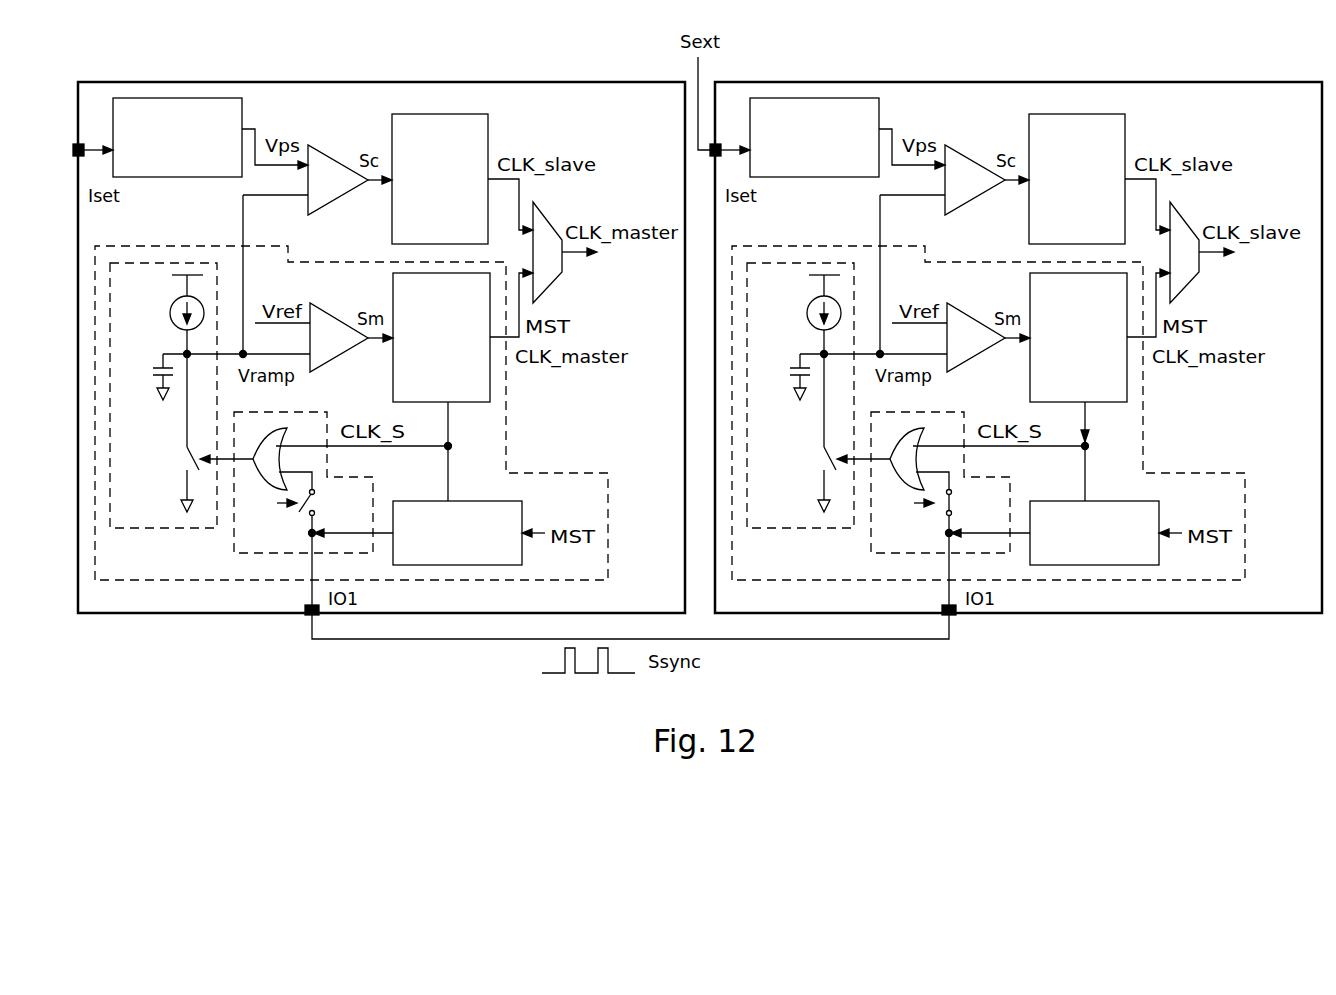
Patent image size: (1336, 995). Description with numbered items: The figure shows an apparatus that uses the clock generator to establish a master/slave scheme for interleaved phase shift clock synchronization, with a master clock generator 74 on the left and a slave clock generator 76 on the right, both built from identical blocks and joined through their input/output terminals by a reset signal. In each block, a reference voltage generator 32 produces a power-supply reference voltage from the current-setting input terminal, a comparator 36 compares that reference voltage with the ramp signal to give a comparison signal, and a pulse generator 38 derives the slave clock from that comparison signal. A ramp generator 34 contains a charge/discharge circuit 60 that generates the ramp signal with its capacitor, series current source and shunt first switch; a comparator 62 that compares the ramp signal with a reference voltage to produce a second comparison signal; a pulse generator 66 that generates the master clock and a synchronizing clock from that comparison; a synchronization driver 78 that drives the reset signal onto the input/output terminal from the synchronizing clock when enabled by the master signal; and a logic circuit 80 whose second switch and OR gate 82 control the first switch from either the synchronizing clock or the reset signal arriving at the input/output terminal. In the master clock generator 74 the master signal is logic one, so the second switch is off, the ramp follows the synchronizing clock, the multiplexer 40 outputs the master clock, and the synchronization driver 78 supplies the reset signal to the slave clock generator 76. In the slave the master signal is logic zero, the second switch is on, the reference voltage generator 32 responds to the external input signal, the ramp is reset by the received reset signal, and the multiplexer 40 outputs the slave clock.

The master clock generator 74 is at (338, 82).
The slave clock generator 76 is at (975, 82).
The reference voltage generator 32 is at (176, 178).
The comparator 36 is at (339, 160).
The pulse generator 38 is at (392, 208).
The multiplexer 40 is at (549, 225).
The comparator 62 is at (340, 318).
The pulse generator 66 is at (393, 369).
The ramp generator 34 is at (558, 474).
The charge/discharge circuit 60 is at (150, 529).
The synchronization driver 78 is at (478, 501).
The logic circuit 80 is at (347, 479).
The OR gate 82 is at (279, 432).